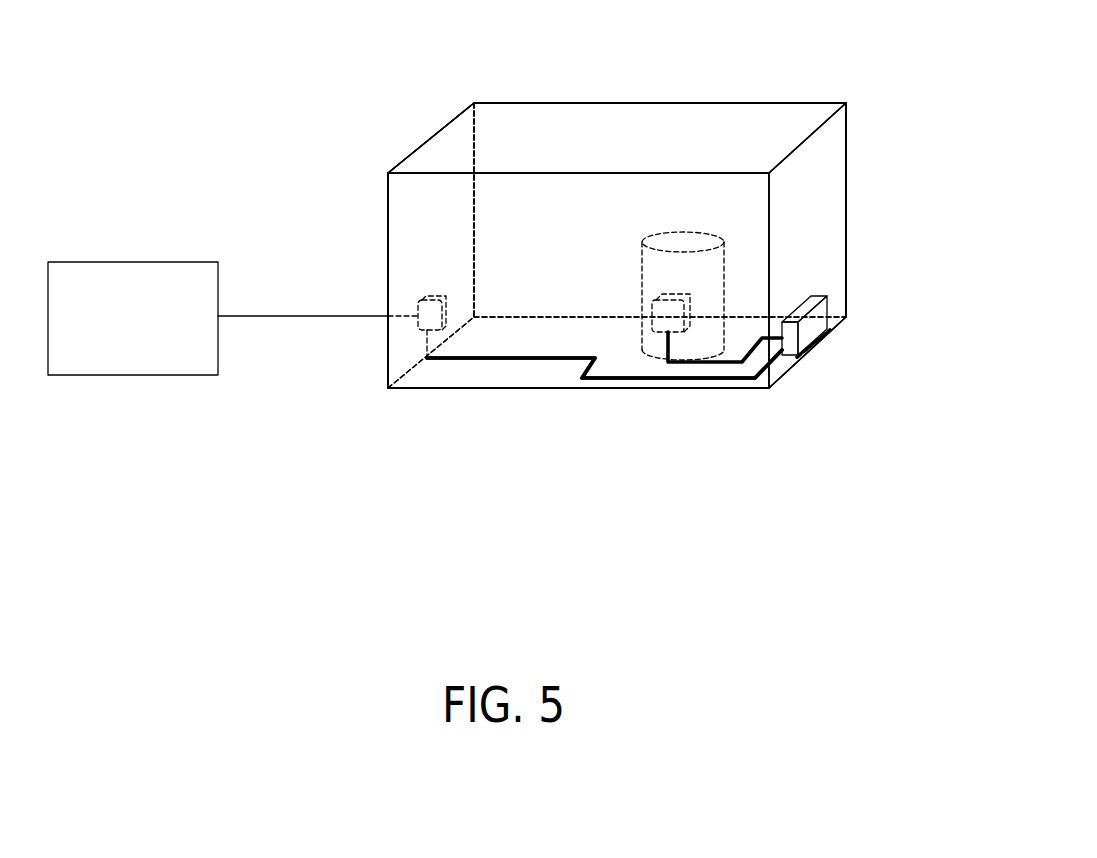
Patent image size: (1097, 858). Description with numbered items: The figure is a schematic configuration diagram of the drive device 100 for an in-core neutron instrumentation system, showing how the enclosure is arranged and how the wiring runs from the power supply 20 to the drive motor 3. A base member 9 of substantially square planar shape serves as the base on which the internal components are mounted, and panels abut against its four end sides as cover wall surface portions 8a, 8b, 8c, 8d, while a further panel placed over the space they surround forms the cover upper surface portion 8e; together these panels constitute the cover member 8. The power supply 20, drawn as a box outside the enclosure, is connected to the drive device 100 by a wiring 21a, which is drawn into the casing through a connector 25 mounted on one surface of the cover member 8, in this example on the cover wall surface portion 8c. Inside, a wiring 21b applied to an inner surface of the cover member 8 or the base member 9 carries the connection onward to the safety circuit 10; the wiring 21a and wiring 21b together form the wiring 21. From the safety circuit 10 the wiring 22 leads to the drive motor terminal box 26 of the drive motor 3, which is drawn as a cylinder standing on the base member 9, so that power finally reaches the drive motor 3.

The drive device 100 is at (846, 176).
The cover member 8 is at (846, 278).
The cover wall surface portion 8a is at (825, 233).
The cover wall surface portion 8b is at (520, 255).
The cover wall surface portion 8c is at (433, 240).
The cover wall surface portion 8d is at (600, 210).
The cover upper surface portion 8e is at (693, 137).
The drive motor 3 is at (688, 238).
The base member 9 is at (553, 378).
The safety circuit 10 is at (828, 334).
The power supply 20 is at (128, 376).
The wiring 21 is at (500, 429).
The wiring 21a is at (350, 318).
The wiring 21b is at (478, 358).
The wiring 22 is at (718, 362).
The connector 25 is at (418, 306).
The drive motor terminal box 26 is at (655, 333).